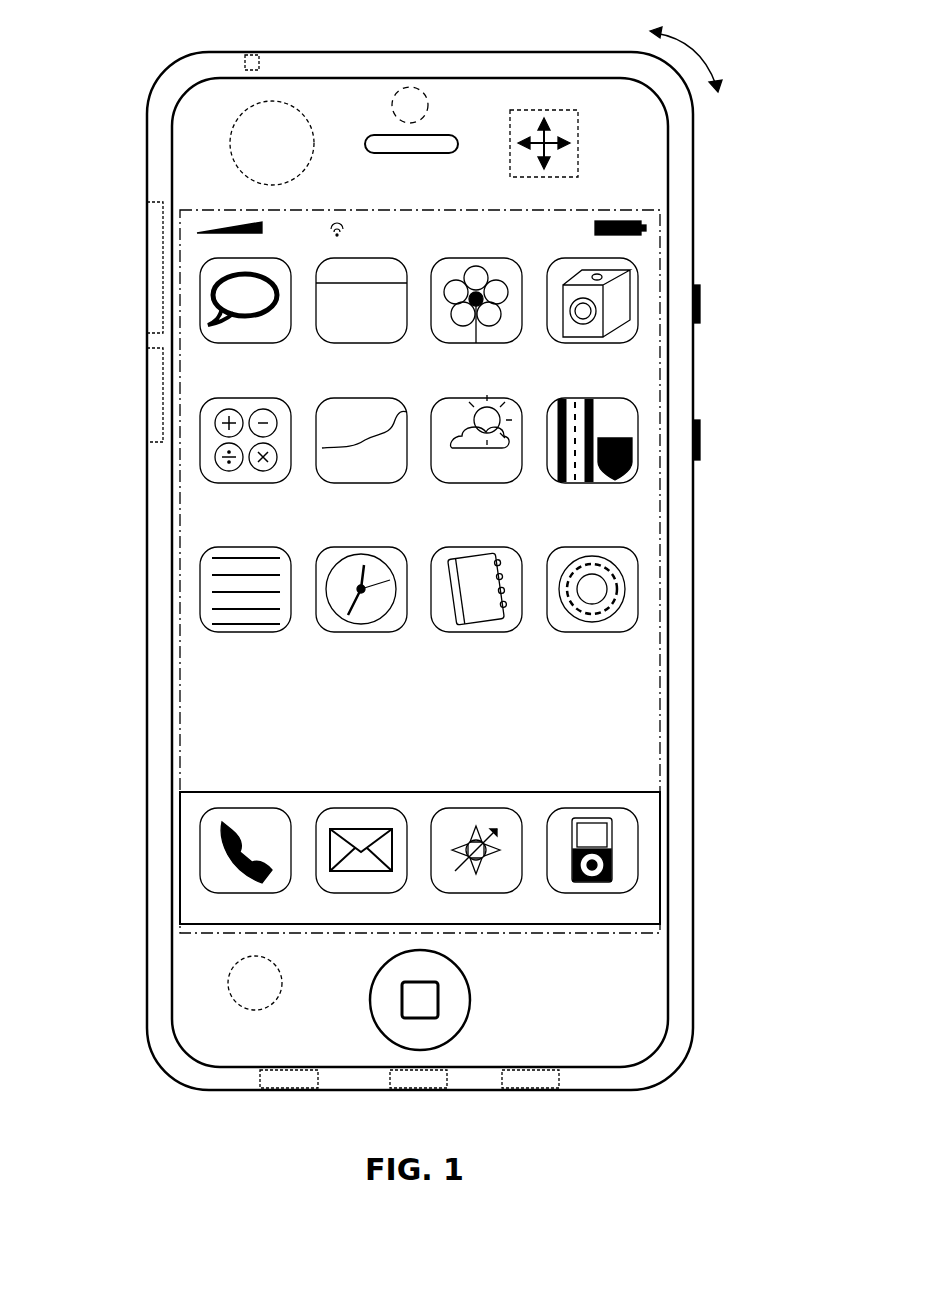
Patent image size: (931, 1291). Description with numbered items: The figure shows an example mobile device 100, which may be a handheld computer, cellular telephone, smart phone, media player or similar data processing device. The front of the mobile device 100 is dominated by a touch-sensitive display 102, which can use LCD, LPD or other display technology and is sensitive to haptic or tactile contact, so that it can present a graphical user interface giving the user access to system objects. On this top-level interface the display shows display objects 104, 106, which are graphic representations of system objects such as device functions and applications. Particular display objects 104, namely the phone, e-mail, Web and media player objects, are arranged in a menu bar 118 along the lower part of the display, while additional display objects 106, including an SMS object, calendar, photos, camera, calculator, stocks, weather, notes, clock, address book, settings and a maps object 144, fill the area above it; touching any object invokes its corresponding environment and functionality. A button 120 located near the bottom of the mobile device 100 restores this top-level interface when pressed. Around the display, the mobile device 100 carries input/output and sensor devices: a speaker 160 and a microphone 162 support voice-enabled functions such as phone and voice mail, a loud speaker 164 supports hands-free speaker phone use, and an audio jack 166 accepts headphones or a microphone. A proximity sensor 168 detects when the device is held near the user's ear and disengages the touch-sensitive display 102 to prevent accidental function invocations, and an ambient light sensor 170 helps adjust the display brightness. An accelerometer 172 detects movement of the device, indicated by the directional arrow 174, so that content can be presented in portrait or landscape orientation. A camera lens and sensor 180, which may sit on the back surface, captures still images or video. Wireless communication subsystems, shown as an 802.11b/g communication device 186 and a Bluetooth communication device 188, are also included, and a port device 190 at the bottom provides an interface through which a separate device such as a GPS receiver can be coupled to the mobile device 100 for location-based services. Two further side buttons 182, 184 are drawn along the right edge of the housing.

The mobile device 100 is at (500, 52).
The touch-sensitive display 102 is at (600, 205).
The display objects 104 is at (645, 808).
The display objects 106 is at (478, 501).
The menu bar 118 is at (551, 930).
The button 120 is at (470, 998).
The maps object 144 is at (636, 480).
The speaker 160 is at (385, 153).
The microphone 162 is at (318, 1078).
The loud speaker 164 is at (559, 1078).
The audio jack 166 is at (259, 62).
The proximity sensor 168 is at (231, 148).
The ambient light sensor 170 is at (272, 1005).
The accelerometer 172 is at (578, 145).
The directional arrow 174 is at (703, 62).
The camera lens and sensor 180 is at (428, 105).
The volume / push button 182 is at (700, 305).
The volume / push button 184 is at (700, 440).
The 802.11b/g communication device 186 is at (160, 204).
The Bluetooth communication device 188 is at (160, 350).
The port device 190 is at (447, 1078).